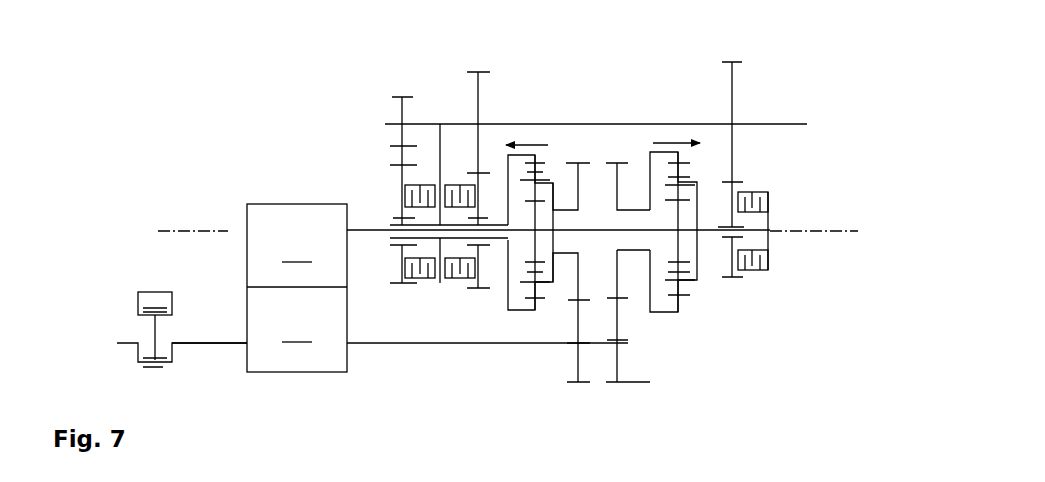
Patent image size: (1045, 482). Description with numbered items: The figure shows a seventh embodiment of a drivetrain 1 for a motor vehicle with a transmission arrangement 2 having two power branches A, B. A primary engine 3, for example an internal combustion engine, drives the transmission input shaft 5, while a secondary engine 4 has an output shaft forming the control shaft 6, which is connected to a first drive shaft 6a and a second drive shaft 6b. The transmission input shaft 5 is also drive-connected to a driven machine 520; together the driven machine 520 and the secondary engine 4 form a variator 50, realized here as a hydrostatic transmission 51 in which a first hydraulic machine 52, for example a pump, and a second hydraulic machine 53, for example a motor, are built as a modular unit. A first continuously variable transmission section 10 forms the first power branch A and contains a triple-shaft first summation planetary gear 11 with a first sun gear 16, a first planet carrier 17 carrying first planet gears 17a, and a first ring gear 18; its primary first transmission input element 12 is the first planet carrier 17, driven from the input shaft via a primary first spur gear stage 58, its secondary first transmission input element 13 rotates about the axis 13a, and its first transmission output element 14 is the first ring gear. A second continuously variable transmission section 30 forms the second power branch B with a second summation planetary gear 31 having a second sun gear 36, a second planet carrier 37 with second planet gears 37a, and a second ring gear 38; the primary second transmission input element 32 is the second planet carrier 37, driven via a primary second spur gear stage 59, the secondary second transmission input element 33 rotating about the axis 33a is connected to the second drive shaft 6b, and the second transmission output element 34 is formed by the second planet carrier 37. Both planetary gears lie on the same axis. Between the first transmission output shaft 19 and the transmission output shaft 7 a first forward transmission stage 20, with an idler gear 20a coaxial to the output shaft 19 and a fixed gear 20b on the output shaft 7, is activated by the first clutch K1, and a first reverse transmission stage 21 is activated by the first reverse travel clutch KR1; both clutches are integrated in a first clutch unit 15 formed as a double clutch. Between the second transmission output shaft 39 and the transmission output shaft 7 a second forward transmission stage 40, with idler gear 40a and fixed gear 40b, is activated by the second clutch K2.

The drivetrain 1 is at (215, 381).
The transmission arrangement 2 is at (349, 146).
The primary engine 3 is at (117, 304).
The secondary engine 4 is at (271, 202).
The transmission input shaft 5 is at (217, 340).
The control shaft 6 is at (360, 245).
The first drive shaft 6a is at (510, 282).
The second drive shaft 6b is at (660, 240).
The transmission output shaft 7 is at (793, 121).
The first continuously variable transmission section 10 is at (505, 319).
The first summation planetary gear 11 is at (565, 319).
The primary first transmission input element 12 is at (579, 270).
The secondary first transmission input element 13 is at (555, 182).
The axis of rotation 13a is at (172, 231).
The first transmission output element 14 is at (505, 187).
The first clutch unit 15 is at (429, 283).
The first sun gear 16 is at (535, 243).
The first planet carrier 17 is at (553, 195).
The first planet gears 17a is at (507, 300).
The first ring gear 18 is at (508, 170).
The first transmission output shaft 19 is at (390, 225).
The first forward transmission stage 20 is at (476, 70).
The idler gear 20a is at (472, 283).
The fixed gear 20b is at (473, 85).
The first reverse transmission stage 21 is at (397, 94).
The second continuously variable transmission section 30 is at (672, 323).
The second summation planetary gear 31 is at (690, 314).
The primary second transmission input element 32 is at (620, 285).
The secondary second transmission input element 33 is at (700, 255).
The axis of rotation 33a is at (847, 230).
The second transmission output element 34 is at (700, 195).
The second sun gear 36 is at (650, 221).
The second planet carrier 37 is at (680, 192).
The second planet gears 37a is at (656, 190).
The second ring gear 38 is at (652, 188).
The second transmission output shaft 39 is at (701, 233).
The second forward transmission stage 40 is at (735, 59).
The idler gear 40a is at (740, 277).
The fixed gear 40b is at (733, 78).
The variator 50 is at (246, 225).
The hydrostatic transmission 51 is at (285, 376).
The first hydraulic machine 52 is at (297, 330).
The second hydraulic machine 53 is at (297, 250).
The primary first spur gear stage 58 is at (570, 391).
The primary second spur gear stage 59 is at (617, 391).
The driven machine 520 is at (334, 365).
The first power branch A is at (518, 140).
The second power branch B is at (680, 140).
The first clutch K1 is at (465, 183).
The second clutch K2 is at (768, 200).
The first reverse travel clutch KR1 is at (430, 183).